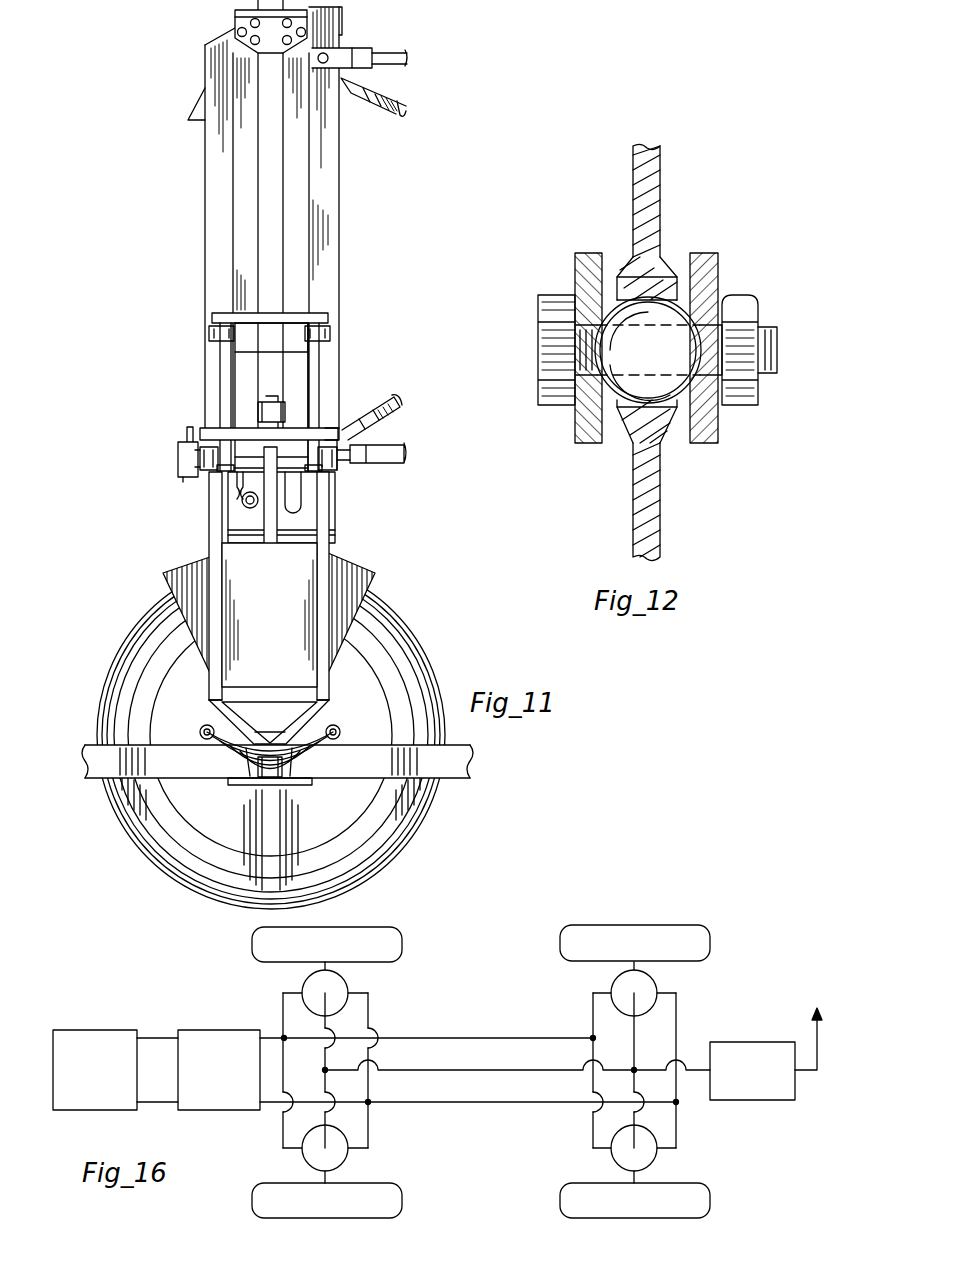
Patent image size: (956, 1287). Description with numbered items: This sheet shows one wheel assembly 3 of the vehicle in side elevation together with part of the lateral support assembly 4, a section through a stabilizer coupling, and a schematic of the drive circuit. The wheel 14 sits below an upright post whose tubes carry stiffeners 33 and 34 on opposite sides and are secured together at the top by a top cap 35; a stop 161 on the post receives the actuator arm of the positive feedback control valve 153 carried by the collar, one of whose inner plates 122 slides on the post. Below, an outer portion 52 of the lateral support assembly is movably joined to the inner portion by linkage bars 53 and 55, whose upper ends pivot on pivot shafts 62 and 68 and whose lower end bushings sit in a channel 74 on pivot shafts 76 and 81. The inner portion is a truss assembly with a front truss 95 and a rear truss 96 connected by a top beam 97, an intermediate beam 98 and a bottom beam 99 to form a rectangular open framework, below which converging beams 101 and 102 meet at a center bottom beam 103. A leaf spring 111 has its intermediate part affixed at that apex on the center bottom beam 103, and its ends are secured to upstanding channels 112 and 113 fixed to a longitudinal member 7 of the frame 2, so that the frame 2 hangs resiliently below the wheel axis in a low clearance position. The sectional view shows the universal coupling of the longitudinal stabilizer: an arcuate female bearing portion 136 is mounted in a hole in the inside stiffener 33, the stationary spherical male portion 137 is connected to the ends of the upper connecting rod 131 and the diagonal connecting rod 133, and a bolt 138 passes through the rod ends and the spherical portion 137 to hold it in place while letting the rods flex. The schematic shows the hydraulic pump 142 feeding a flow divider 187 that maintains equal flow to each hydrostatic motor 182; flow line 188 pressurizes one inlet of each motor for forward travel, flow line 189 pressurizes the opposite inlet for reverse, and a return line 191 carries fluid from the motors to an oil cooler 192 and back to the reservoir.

In FIG. 11, the frame 2 is at (455, 766).
In FIG. 11, the wheel assembly 3 is at (346, 304).
In FIG. 11, the lateral support assembly 4 is at (332, 480).
In FIG. 11, the longitudinal member 7 is at (104, 778).
In FIG. 16, the wheel 14 is at (392, 933).
In FIG. 11, the stiffener 33 is at (226, 197).
In FIG. 12, the stiffener 33 is at (654, 208).
In FIG. 11, the stiffener 34 is at (326, 205).
In FIG. 12, the stiffener 34 is at (650, 530).
In FIG. 11, the top cap 35 is at (237, 26).
In FIG. 11, the outer portion 52 is at (210, 317).
In FIG. 11, the linkage bar 53 is at (316, 385).
In FIG. 11, the linkage bar 55 is at (226, 389).
In FIG. 11, the pivot shaft 62 is at (326, 341).
In FIG. 11, the pivot shaft 68 is at (212, 340).
In FIG. 11, the channel 74 is at (310, 505).
In FIG. 11, the pivot shaft 76 is at (326, 471).
In FIG. 11, the pivot shaft 81 is at (190, 479).
In FIG. 11, the front truss 95 is at (219, 539).
In FIG. 11, the rear truss 96 is at (325, 536).
In FIG. 11, the top beam 97 is at (256, 483).
In FIG. 11, the intermediate beam 98 is at (302, 544).
In FIG. 11, the bottom beam 99 is at (261, 695).
In FIG. 11, the converging beam 101 is at (240, 707).
In FIG. 11, the converging beam 102 is at (319, 728).
In FIG. 11, the center bottom beam 103 is at (263, 779).
In FIG. 11, the leaf spring 111 is at (260, 757).
In FIG. 11, the upstanding channel 112 is at (330, 730).
In FIG. 11, the upstanding channel 113 is at (208, 730).
In FIG. 11, the inner plate 122 is at (377, 580).
In FIG. 12, the upper connecting rod 131 is at (583, 254).
In FIG. 12, the diagonal connecting rod 133 is at (706, 254).
In FIG. 12, the arcuate female bearing portion 136 is at (640, 430).
In FIG. 12, the spherical male portion 137 is at (683, 326).
In FIG. 12, the bolt 138 is at (576, 414).
In FIG. 16, the hydraulic pump 142 is at (85, 1031).
In FIG. 11, the positive feedback control valve 153 is at (180, 464).
In FIG. 11, the stop 161 is at (196, 116).
In FIG. 16, the hydrostatic motor 182 is at (340, 1155).
In FIG. 16, the flow divider 187 is at (188, 1031).
In FIG. 16, the flow line 188 is at (422, 1035).
In FIG. 16, the flow line 189 is at (435, 1105).
In FIG. 16, the return line 191 is at (427, 1071).
In FIG. 16, the oil cooler 192 is at (726, 1103).